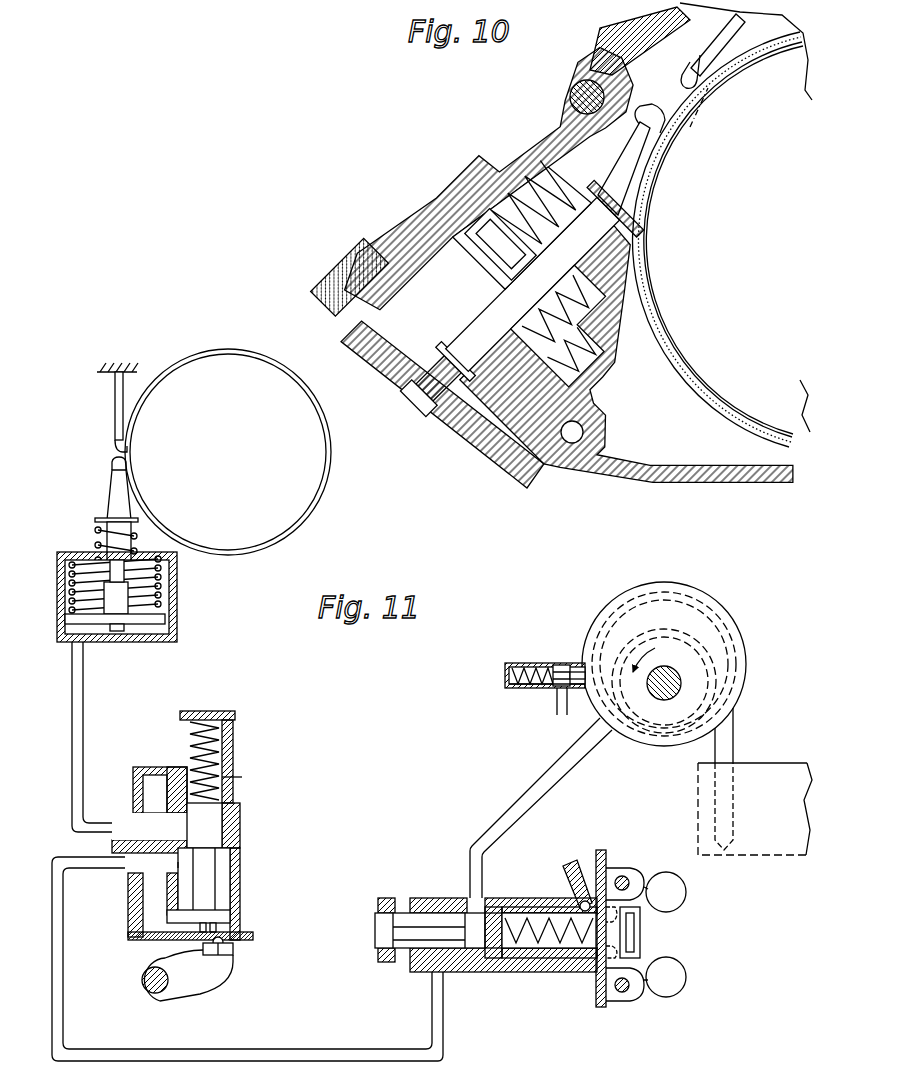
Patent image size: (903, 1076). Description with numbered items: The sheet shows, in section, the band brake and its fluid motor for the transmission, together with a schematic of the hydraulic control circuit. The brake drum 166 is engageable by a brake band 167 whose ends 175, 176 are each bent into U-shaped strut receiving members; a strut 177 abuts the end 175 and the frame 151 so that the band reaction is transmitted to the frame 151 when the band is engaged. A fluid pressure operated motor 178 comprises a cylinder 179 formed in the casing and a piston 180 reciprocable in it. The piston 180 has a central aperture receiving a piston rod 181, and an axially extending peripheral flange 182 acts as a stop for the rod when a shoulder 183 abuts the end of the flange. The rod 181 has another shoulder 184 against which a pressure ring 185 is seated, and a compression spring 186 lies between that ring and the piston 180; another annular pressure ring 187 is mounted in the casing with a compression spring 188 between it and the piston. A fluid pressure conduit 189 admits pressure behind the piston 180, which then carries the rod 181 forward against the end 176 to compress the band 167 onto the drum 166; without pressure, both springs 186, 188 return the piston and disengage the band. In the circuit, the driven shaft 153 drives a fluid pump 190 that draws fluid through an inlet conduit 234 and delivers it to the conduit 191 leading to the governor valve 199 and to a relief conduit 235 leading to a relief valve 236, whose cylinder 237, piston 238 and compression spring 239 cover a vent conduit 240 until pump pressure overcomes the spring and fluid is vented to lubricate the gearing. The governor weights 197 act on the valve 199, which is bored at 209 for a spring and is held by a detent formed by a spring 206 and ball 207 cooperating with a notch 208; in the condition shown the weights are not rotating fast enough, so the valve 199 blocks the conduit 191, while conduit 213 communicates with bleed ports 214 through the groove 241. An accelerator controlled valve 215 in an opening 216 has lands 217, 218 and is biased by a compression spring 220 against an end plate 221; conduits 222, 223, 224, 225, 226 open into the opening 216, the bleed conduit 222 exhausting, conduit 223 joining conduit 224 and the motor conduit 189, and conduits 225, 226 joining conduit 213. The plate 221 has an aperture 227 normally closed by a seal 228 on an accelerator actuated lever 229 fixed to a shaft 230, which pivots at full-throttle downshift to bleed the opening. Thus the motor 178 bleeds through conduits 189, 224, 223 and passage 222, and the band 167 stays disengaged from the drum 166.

In FIG. 10, the frame 151 is at (637, 28).
In FIG. 11, the frame 151 is at (110, 360).
In FIG. 11, the driven shaft 153 is at (664, 693).
In FIG. 10, the brake drum 166 is at (700, 118).
In FIG. 11, the brake drum 166 is at (132, 451).
In FIG. 10, the brake band 167 is at (768, 46).
In FIG. 10, the end of brake band 175 is at (684, 62).
In FIG. 11, the end of brake band 175 is at (110, 443).
In FIG. 10, the end of brake band 176 is at (645, 105).
In FIG. 11, the end of brake band 176 is at (108, 468).
In FIG. 10, the strut 177 is at (715, 45).
In FIG. 11, the strut 177 is at (114, 397).
In FIG. 10, the fluid pressure operated motor 178 is at (426, 188).
In FIG. 11, the fluid pressure operated motor 178 is at (182, 585).
In FIG. 10, the cylinder 179 is at (385, 330).
In FIG. 11, the cylinder 179 is at (68, 593).
In FIG. 10, the piston 180 is at (430, 346).
In FIG. 11, the piston 180 is at (170, 620).
In FIG. 10, the piston rod 181 is at (565, 250).
In FIG. 11, the piston rod 181 is at (110, 510).
In FIG. 10, the peripheral flange 182 is at (580, 322).
In FIG. 10, the shoulder 183 is at (560, 292).
In FIG. 10, the shoulder 184 is at (574, 180).
In FIG. 10, the pressure ring 185 is at (625, 236).
In FIG. 10, the compression spring 186 is at (545, 201).
In FIG. 11, the compression spring 186 is at (100, 552).
In FIG. 10, the annular pressure ring 187 is at (475, 215).
In FIG. 10, the compression spring 188 is at (575, 305).
In FIG. 11, the compression spring 188 is at (68, 573).
In FIG. 10, the fluid pressure conduit 189 is at (584, 432).
In FIG. 11, the fluid pressure conduit 189 is at (76, 678).
In FIG. 11, the fluid pump 190 is at (742, 614).
In FIG. 11, the conduit 191 is at (550, 776).
In FIG. 11, the governor weights 197 is at (670, 960).
In FIG. 11, the governor valve 199 is at (372, 930).
In FIG. 11, the spring 206 is at (572, 866).
In FIG. 11, the ball 207 is at (578, 904).
In FIG. 11, the notch 208 is at (596, 965).
In FIG. 11, the bore 209 is at (515, 958).
In FIG. 11, the conduit 213 is at (52, 901).
In FIG. 11, the bleed ports 214 is at (401, 898).
In FIG. 11, the accelerator controlled valve 215 is at (250, 815).
In FIG. 11, the opening 216 is at (225, 871).
In FIG. 11, the land 217 is at (212, 838).
In FIG. 11, the land 218 is at (230, 915).
In FIG. 11, the compression spring 220 is at (225, 730).
In FIG. 11, the end plate 221 is at (130, 937).
In FIG. 11, the bleed conduit 222 is at (240, 781).
In FIG. 11, the conduit 223 is at (178, 770).
In FIG. 11, the conduit 224 is at (182, 836).
In FIG. 11, the conduit 225 is at (170, 866).
In FIG. 11, the conduit 226 is at (210, 930).
In FIG. 11, the aperture 227 is at (225, 935).
In FIG. 11, the seal 228 is at (233, 962).
In FIG. 11, the accelerator actuated lever 229 is at (200, 985).
In FIG. 11, the shaft 230 is at (141, 983).
In FIG. 11, the inlet conduit 234 is at (735, 736).
In FIG. 11, the relief conduit 235 is at (578, 665).
In FIG. 11, the relief valve 236 is at (500, 675).
In FIG. 11, the cylinder 237 is at (525, 665).
In FIG. 11, the piston 238 is at (561, 665).
In FIG. 11, the compression spring 239 is at (512, 688).
In FIG. 11, the vent conduit 240 is at (556, 706).
In FIG. 11, the groove 241 is at (443, 905).